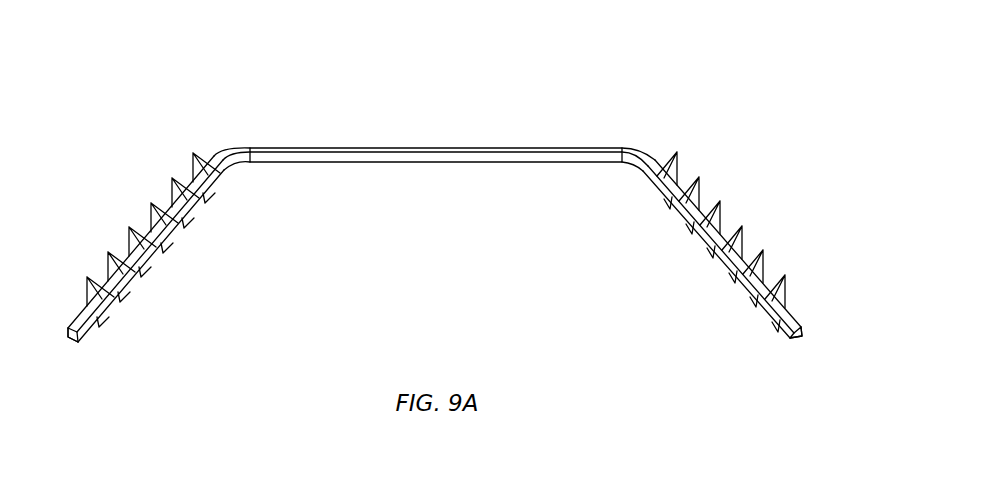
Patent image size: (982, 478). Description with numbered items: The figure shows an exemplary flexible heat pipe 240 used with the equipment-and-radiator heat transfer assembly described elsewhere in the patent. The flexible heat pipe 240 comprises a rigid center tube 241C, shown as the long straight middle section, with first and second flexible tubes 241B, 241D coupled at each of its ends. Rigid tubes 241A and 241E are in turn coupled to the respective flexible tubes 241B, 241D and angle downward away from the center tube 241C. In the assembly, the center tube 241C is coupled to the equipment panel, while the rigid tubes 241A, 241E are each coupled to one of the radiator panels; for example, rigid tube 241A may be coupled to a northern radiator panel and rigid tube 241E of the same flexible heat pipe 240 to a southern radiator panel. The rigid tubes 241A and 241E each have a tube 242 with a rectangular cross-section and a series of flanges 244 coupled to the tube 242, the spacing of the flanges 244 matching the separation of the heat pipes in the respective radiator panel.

The flexible heat pipe 240 is at (320, 37).
The rigid tube 241A is at (177, 143).
The flexible tube 241B is at (228, 155).
The rigid center tube 241C is at (613, 133).
The flexible tube 241D is at (645, 150).
The rigid tube 241E is at (705, 150).
The tube 242 is at (73, 338).
The flanges 244 is at (90, 292).